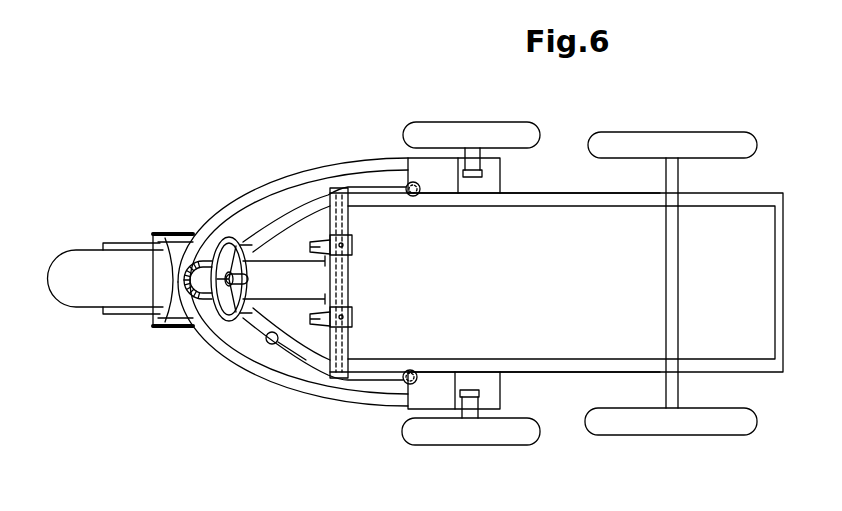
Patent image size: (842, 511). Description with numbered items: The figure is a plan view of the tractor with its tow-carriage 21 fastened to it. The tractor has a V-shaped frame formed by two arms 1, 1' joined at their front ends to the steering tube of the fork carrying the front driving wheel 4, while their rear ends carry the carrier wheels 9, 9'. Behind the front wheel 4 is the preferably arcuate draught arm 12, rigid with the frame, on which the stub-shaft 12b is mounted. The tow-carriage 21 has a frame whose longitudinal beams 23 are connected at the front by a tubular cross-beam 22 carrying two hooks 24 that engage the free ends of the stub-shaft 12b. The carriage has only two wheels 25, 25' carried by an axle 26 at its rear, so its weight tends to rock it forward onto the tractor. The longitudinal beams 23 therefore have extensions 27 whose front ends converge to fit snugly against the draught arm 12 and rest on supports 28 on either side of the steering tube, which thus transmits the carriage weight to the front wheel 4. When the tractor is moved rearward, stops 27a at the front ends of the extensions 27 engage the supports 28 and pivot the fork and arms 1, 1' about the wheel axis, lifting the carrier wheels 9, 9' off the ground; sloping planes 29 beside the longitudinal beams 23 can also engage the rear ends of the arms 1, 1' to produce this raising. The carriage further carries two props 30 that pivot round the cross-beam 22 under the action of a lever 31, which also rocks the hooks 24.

The arm 1 is at (293, 204).
The arm 1' is at (293, 361).
The driving wheel 4 is at (121, 280).
The carrier wheel 9 is at (471, 434).
The carrier wheel 9' is at (472, 133).
The draught arm 12 is at (288, 277).
The stub-shaft 12b is at (317, 243).
The tow-carriage 21 is at (741, 236).
The cross-beam 22 is at (353, 218).
The longitudinal beams 23 is at (547, 198).
The hooks 24 is at (353, 243).
The wheel 25 is at (676, 432).
The wheel 25' is at (672, 133).
The axle 26 is at (676, 263).
The extensions 27 is at (320, 200).
The stops 27a is at (223, 212).
The supports 28 is at (216, 313).
The sloping planes 29 is at (442, 180).
The props 30 is at (397, 194).
The lever 31 is at (308, 362).